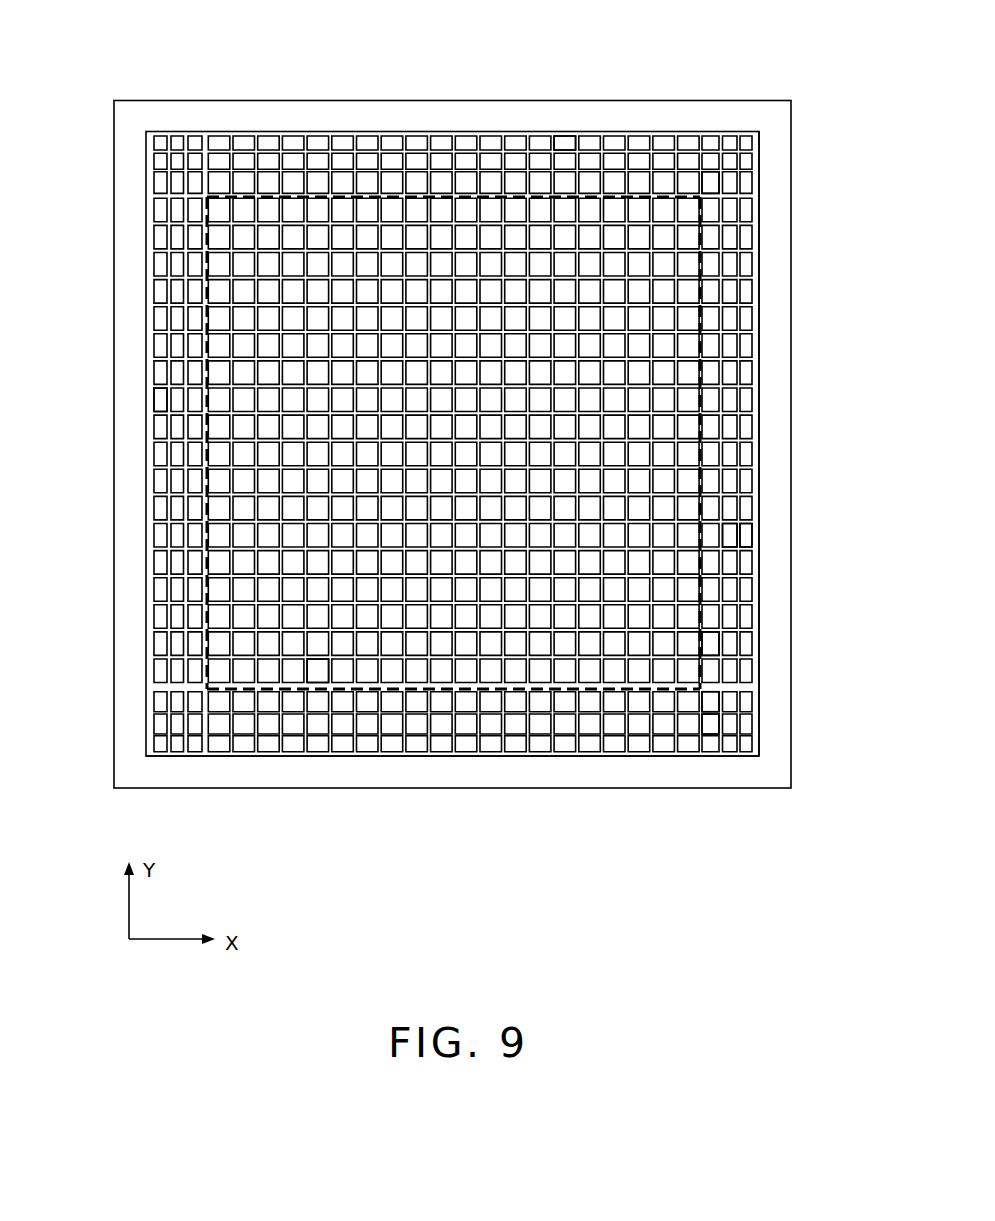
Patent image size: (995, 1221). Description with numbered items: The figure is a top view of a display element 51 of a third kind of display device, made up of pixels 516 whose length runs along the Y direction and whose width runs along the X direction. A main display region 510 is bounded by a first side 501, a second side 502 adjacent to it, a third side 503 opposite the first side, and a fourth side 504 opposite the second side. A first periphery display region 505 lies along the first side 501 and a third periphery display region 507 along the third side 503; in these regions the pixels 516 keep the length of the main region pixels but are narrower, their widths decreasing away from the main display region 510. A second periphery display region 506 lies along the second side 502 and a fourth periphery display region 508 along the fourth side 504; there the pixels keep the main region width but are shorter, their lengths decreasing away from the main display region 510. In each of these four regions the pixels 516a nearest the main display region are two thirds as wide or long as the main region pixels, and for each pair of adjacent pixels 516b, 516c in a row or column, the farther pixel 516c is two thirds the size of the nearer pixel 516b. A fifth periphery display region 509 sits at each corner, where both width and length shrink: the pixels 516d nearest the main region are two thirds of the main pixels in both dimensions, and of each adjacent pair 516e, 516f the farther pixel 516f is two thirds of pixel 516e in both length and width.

The display element 51 is at (289, 42).
The first side 501 is at (700, 405).
The second side 502 is at (533, 690).
The third side 503 is at (207, 455).
The fourth side 504 is at (413, 197).
The first periphery display region 505 is at (755, 456).
The second periphery display region 506 is at (428, 752).
The third periphery display region 507 is at (150, 402).
The fourth periphery display region 508 is at (553, 147).
The fifth periphery display region 509 is at (755, 138).
The main display region 510 is at (305, 675).
The pixel 516 is at (638, 212).
The pixel adjacent to main display region 516a is at (708, 650).
The nearer pixel of adjacent pixel pair 516b is at (730, 533).
The farther pixel of adjacent pixel pair 516c is at (747, 538).
The corner pixel adjacent to main display region 516d is at (710, 187).
The nearer corner pixel of adjacent pair 516e is at (708, 705).
The farther corner pixel of adjacent pair 516f is at (709, 727).